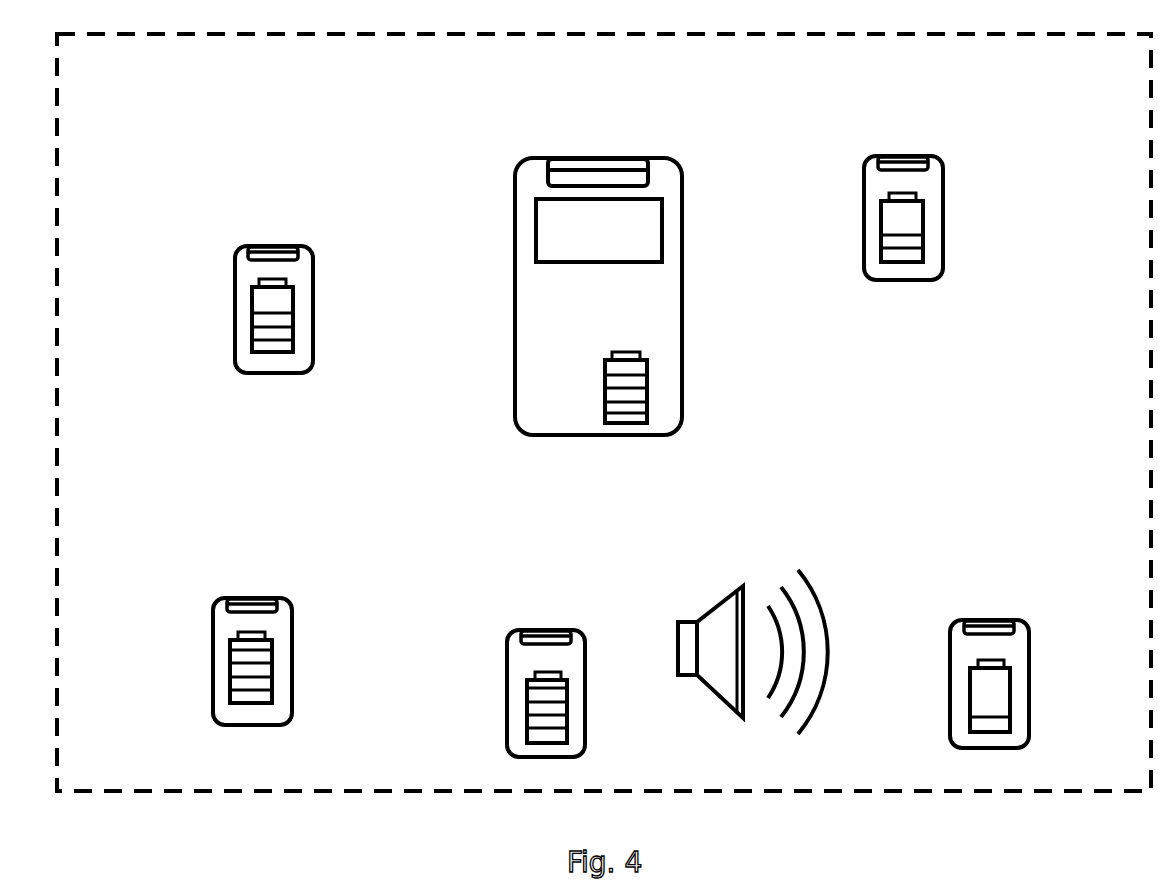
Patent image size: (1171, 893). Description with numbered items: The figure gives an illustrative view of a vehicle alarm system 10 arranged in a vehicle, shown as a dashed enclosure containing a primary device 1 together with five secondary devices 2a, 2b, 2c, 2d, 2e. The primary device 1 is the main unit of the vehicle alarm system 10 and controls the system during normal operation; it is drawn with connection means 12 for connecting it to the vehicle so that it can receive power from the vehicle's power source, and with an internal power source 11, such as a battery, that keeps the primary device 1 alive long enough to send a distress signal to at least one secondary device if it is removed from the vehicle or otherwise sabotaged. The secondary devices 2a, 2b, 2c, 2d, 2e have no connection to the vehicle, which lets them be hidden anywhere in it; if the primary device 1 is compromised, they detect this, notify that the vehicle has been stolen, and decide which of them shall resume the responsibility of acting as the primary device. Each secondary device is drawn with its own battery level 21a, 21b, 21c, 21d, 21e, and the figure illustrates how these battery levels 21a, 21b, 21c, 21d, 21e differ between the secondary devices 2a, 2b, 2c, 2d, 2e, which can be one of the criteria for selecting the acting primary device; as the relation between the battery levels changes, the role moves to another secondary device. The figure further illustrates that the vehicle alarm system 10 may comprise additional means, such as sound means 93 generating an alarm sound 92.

The vehicle alarm system 10 is at (800, 793).
The primary device 1 is at (527, 162).
The internal power source 11 is at (647, 398).
The connection means 12 is at (662, 222).
The secondary device 2a is at (240, 250).
The secondary device 2b is at (220, 600).
The secondary device 2c is at (512, 632).
The secondary device 2d is at (958, 622).
The secondary device 2e is at (870, 160).
The battery level 21a is at (293, 320).
The battery level 21b is at (272, 665).
The battery level 21c is at (567, 718).
The battery level 21d is at (1010, 675).
The battery level 21e is at (923, 233).
The alarm sound 92 is at (793, 568).
The sound means 93 is at (715, 600).